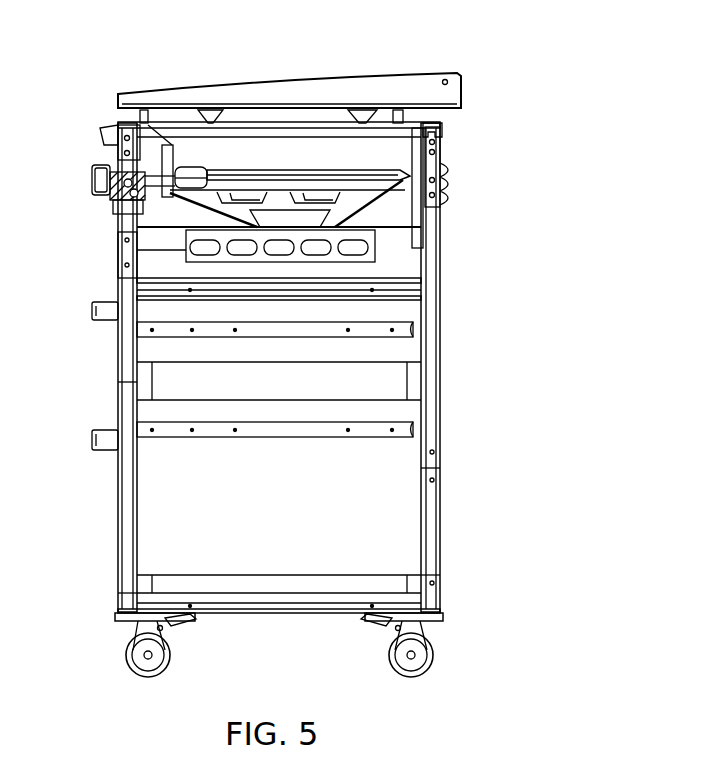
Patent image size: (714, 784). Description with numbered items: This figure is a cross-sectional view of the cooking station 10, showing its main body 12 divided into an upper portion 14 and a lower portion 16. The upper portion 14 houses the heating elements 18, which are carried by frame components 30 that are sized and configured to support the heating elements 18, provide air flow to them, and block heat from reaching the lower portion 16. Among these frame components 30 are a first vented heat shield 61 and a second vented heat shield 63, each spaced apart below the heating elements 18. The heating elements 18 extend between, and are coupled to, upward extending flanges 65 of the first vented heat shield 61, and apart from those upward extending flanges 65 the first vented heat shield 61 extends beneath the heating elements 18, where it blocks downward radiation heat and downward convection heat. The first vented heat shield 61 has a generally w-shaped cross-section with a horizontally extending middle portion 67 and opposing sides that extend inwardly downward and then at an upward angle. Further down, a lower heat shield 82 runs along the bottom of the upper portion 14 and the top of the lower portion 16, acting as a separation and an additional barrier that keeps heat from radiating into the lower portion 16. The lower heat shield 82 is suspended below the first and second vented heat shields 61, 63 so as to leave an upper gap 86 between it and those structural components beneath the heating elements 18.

The cooking station 10 is at (530, 50).
The main body 12 is at (531, 115).
The upper portion 14 is at (490, 127).
The lower portion 16 is at (490, 296).
The heating elements 18 is at (300, 172).
The frame components 30 is at (412, 217).
The first vented heat shield 61 is at (178, 210).
The second vented heat shield 63 is at (185, 243).
The upward extending flanges 65 is at (440, 150).
The horizontally extending middle portion 67 is at (272, 212).
The lower heat shield 82 is at (195, 278).
The upper gap 86 is at (256, 272).